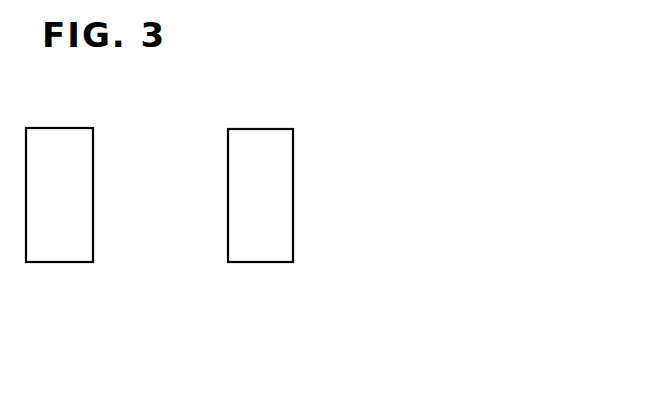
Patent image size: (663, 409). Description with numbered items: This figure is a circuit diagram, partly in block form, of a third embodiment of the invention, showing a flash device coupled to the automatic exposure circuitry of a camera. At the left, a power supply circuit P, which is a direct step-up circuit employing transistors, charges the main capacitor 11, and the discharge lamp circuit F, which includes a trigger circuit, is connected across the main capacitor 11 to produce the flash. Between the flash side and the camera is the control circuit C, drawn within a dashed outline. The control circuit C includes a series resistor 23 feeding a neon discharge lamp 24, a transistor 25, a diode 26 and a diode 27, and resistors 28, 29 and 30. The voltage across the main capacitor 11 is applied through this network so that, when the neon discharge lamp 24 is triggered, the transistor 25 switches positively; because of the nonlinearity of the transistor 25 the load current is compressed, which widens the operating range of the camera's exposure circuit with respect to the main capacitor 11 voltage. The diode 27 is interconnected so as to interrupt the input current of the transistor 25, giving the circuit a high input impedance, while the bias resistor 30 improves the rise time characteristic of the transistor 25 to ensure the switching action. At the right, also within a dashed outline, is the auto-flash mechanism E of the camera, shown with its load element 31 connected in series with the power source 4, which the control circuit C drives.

The power supply circuit P is at (63, 128).
The discharge lamp circuit F is at (359, 216).
The main capacitor 11 is at (166, 152).
The series resistor 23 is at (341, 130).
The neon discharge lamp 24 is at (350, 176).
The transistor 25 is at (402, 250).
The diode 26 is at (341, 254).
The diode 27 is at (380, 346).
The resistor 28 is at (345, 304).
The resistor 29 is at (448, 302).
The bias resistor 30 is at (468, 194).
The load unit 31 is at (548, 173).
The power source 4 is at (544, 276).
The control circuit C is at (412, 66).
The auto-flash mechanism E is at (530, 80).